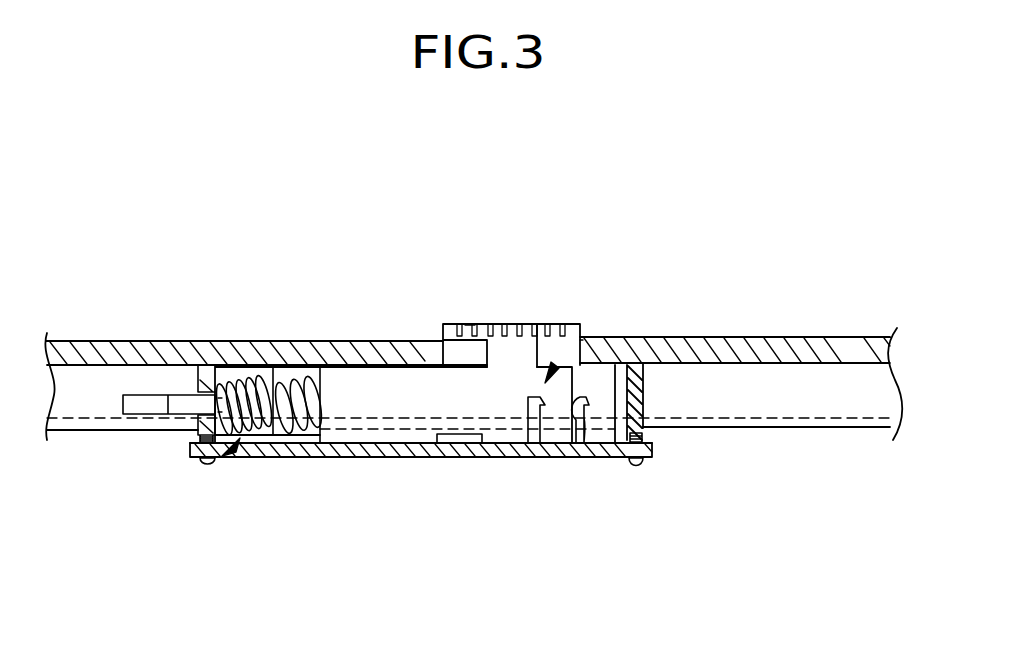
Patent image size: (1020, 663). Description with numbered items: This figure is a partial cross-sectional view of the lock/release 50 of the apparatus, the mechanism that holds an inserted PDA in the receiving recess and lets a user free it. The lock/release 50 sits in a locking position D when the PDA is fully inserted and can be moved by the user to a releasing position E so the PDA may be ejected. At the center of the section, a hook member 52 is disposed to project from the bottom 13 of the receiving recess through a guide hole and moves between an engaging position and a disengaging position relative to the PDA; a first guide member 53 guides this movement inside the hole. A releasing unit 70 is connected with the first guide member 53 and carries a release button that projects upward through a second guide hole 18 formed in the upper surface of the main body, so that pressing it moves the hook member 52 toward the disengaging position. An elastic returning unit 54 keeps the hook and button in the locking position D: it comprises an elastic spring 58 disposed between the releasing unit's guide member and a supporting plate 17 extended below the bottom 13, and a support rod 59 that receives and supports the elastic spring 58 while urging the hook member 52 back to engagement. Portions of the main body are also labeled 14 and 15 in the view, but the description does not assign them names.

The lock/release 50 is at (455, 170).
The bottom 13 is at (108, 425).
The inner pipe center line 14 is at (818, 393).
The outer pipe 15 is at (313, 353).
The supporting plate 17 is at (190, 365).
The second guide hole 18 is at (440, 340).
The hook member 52 is at (587, 458).
The first guide member 53 is at (504, 438).
The elastic returning unit 54 is at (226, 452).
The elastic spring 58 is at (272, 445).
The support rod 59 is at (178, 411).
The releasing unit 70 is at (555, 365).
The releasing position E is at (466, 325).
The locking position D is at (583, 340).